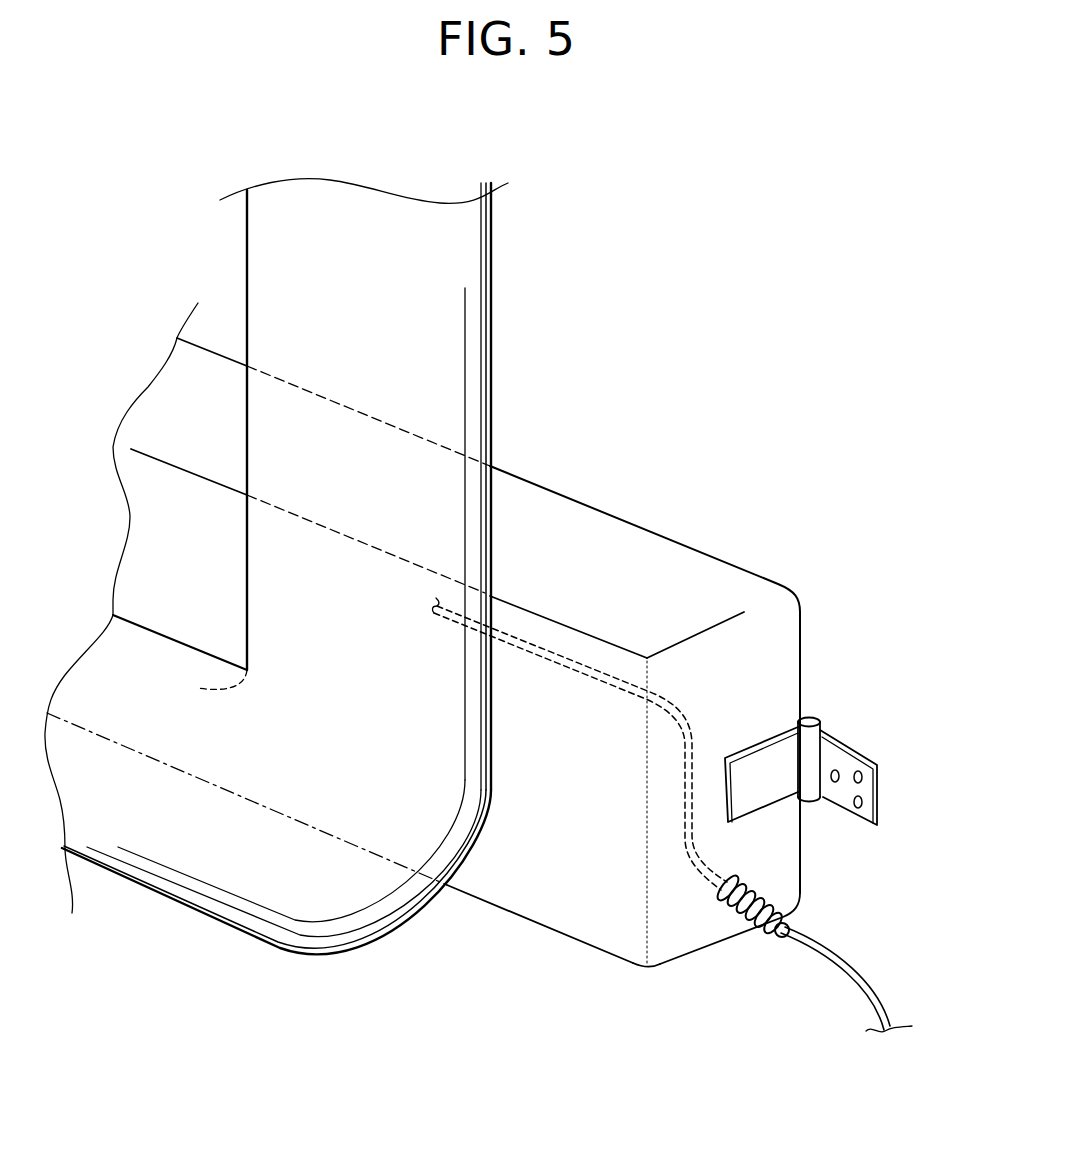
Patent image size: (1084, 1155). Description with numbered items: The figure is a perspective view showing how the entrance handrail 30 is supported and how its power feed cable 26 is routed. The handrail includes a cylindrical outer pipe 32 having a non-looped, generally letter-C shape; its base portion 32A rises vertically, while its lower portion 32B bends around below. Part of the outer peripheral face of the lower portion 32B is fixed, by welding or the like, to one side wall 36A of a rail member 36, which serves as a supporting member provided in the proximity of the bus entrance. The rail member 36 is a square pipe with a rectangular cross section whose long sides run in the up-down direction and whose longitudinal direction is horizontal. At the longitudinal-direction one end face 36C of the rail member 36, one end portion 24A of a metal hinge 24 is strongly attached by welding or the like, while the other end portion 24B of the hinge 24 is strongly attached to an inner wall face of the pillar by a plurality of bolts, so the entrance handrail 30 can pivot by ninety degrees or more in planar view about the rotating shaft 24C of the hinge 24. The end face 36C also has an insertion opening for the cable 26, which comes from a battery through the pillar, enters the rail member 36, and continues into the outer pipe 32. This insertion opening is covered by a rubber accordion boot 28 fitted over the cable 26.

The hinge 24 is at (857, 739).
The one end portion of the hinge 24A is at (760, 762).
The other end portion of the hinge 24B is at (882, 796).
The rotating shaft 24C is at (808, 716).
The power feed cable 26 is at (860, 968).
The rubber accordion boot 28 is at (757, 933).
The entrance handrail 30 is at (498, 298).
The outer pipe 32 is at (167, 907).
The base portion 32A is at (458, 238).
The lower portion 32B is at (155, 665).
The rail member 36 is at (634, 528).
The one side wall of the rail member 36A is at (548, 878).
The longitudinal-direction one end face of the rail member 36C is at (673, 923).